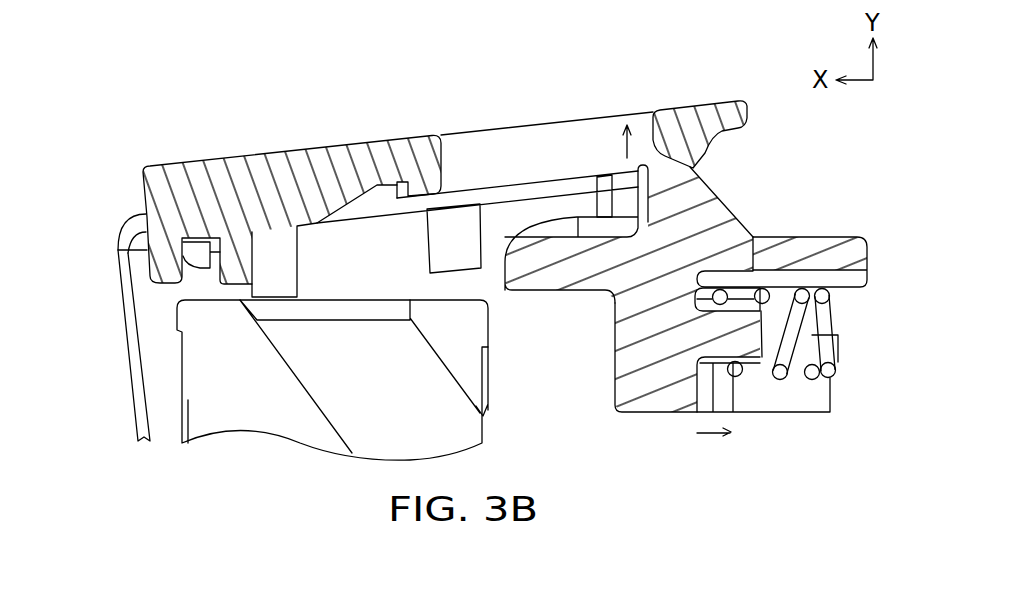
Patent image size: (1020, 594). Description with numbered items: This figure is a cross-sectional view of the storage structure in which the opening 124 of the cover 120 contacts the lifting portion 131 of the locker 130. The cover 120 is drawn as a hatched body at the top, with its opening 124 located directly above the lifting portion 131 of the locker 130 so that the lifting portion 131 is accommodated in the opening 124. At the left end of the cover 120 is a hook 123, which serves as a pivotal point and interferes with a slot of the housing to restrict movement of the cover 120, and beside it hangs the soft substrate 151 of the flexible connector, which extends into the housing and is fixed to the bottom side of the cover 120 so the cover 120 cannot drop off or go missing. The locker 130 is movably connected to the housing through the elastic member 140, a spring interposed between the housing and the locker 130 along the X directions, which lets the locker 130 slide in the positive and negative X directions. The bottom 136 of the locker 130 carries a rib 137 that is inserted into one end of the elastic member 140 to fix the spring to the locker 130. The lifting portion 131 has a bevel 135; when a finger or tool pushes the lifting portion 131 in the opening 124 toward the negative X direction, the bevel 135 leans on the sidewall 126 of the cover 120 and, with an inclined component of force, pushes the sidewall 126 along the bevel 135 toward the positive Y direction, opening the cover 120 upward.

The cover 120 is at (347, 151).
The hook 123 is at (143, 263).
The opening 124 is at (569, 132).
The sidewall 126 is at (697, 165).
The locker 130 is at (815, 247).
The lifting portion 131 is at (698, 188).
The bevel 135 is at (754, 224).
The bottom 136 is at (658, 355).
The rib 137 is at (752, 344).
The elastic member 140 is at (845, 328).
The soft substrate 151 is at (134, 360).